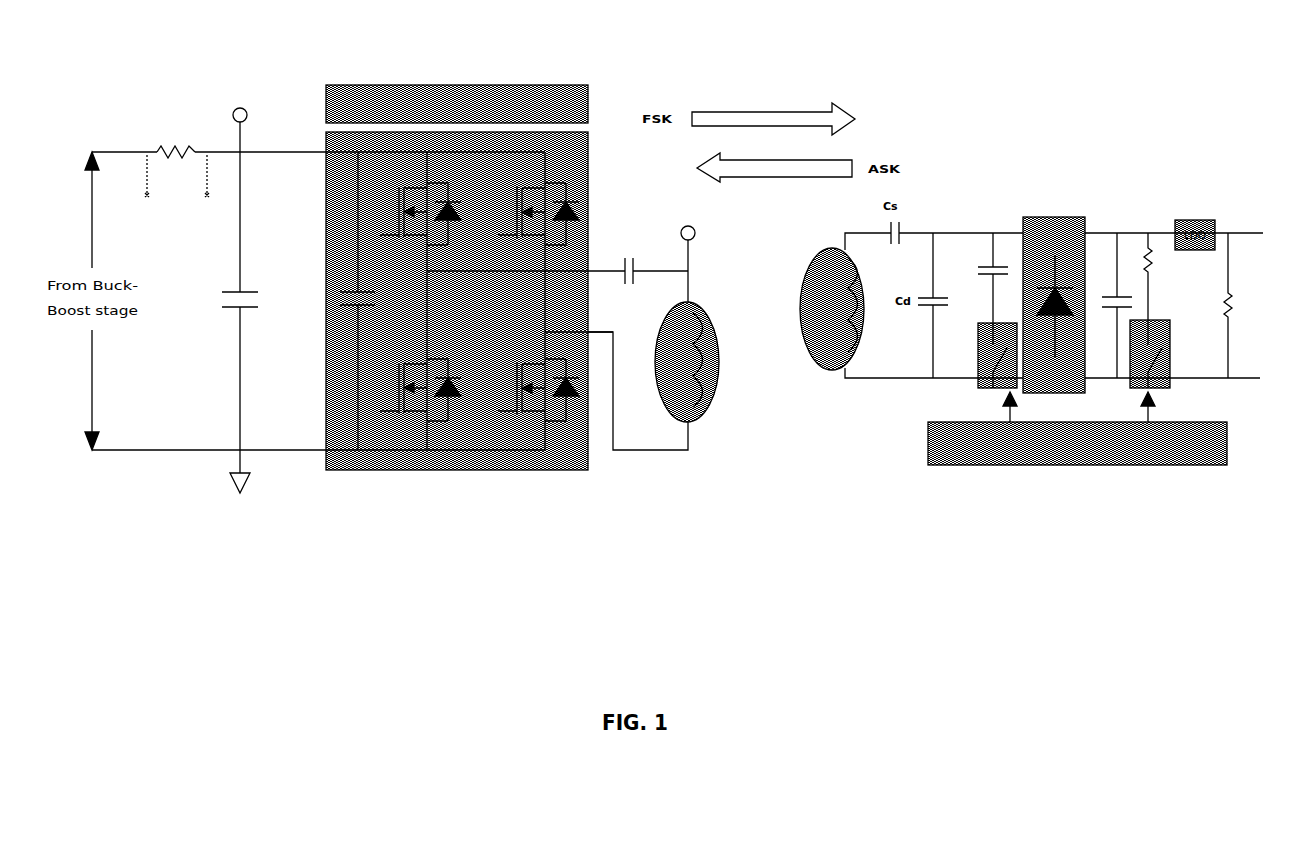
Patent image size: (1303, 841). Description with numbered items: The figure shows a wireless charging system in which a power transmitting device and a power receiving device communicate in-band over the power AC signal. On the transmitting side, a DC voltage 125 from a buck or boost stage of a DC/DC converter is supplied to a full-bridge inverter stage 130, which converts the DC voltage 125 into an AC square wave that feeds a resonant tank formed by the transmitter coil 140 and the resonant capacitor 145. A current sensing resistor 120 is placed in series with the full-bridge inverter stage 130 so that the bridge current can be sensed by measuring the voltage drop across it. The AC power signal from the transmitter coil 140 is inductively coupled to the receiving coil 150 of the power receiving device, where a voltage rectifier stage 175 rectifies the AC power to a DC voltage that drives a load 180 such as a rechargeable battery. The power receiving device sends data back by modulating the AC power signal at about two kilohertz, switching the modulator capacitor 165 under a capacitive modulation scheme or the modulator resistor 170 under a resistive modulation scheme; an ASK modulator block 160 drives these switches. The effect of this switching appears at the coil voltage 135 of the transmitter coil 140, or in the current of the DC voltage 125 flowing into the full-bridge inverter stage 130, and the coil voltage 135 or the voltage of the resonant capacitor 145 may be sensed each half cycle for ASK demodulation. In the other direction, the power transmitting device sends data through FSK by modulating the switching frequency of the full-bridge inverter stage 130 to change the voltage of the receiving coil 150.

The current sensing resistor 120 is at (172, 136).
The DC voltage 125 is at (260, 289).
The full-bridge inverter stage 130 is at (466, 85).
The coil voltage 135 is at (712, 254).
The transmitter coil 140 is at (712, 417).
The resonant capacitor 145 is at (655, 259).
The receiving coil 150 is at (793, 338).
The PRx ASK modulator 160 is at (1082, 466).
The modulator capacitor 165 is at (981, 327).
The modulator resistor 170 is at (1164, 327).
The voltage rectifier stage 175 is at (1060, 216).
The load 180 is at (1256, 305).